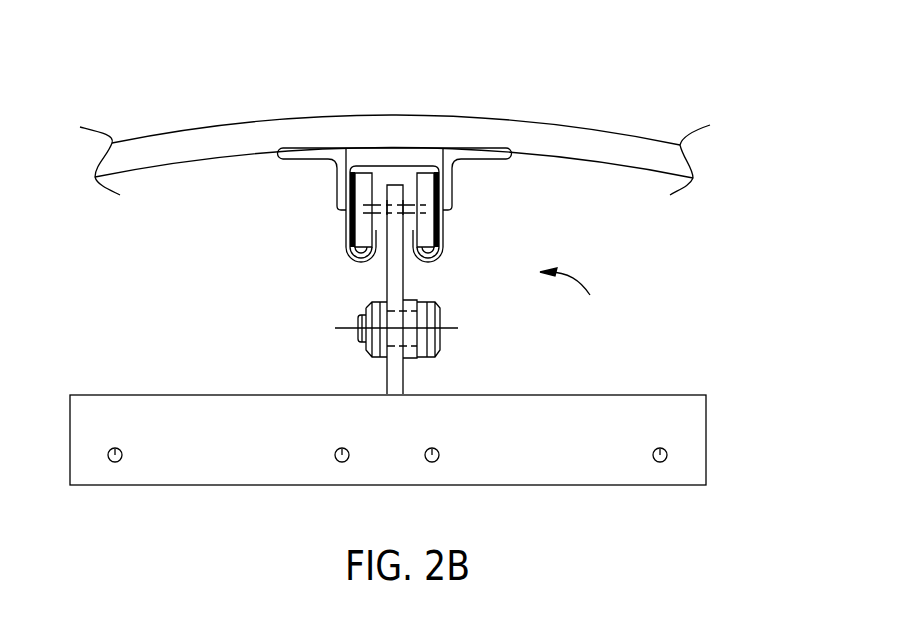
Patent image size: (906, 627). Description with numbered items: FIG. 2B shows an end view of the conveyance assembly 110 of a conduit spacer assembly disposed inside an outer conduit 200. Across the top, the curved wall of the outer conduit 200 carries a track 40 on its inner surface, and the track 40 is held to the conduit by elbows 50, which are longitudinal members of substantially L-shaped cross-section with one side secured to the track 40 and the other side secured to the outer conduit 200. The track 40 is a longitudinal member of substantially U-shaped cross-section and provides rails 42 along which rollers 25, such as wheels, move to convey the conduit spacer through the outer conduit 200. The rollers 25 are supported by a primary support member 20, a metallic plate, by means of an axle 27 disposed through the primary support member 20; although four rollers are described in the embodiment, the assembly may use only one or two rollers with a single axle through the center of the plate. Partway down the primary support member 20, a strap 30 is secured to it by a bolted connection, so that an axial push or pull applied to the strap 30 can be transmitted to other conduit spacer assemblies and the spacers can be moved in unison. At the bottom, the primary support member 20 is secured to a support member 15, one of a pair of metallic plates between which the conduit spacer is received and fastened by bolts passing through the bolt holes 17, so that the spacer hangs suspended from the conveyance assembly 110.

The outer conduit 200 is at (197, 127).
The elbow 50 is at (300, 159).
The track 40 is at (450, 217).
The rail 42 is at (362, 240).
The roller 25 is at (368, 266).
The axle 27 is at (409, 206).
The primary support member 20 is at (382, 284).
The strap 30 is at (410, 359).
The support member 15 is at (706, 409).
The bolt hole 17 is at (119, 449).
The conveyance assembly 110 is at (586, 298).